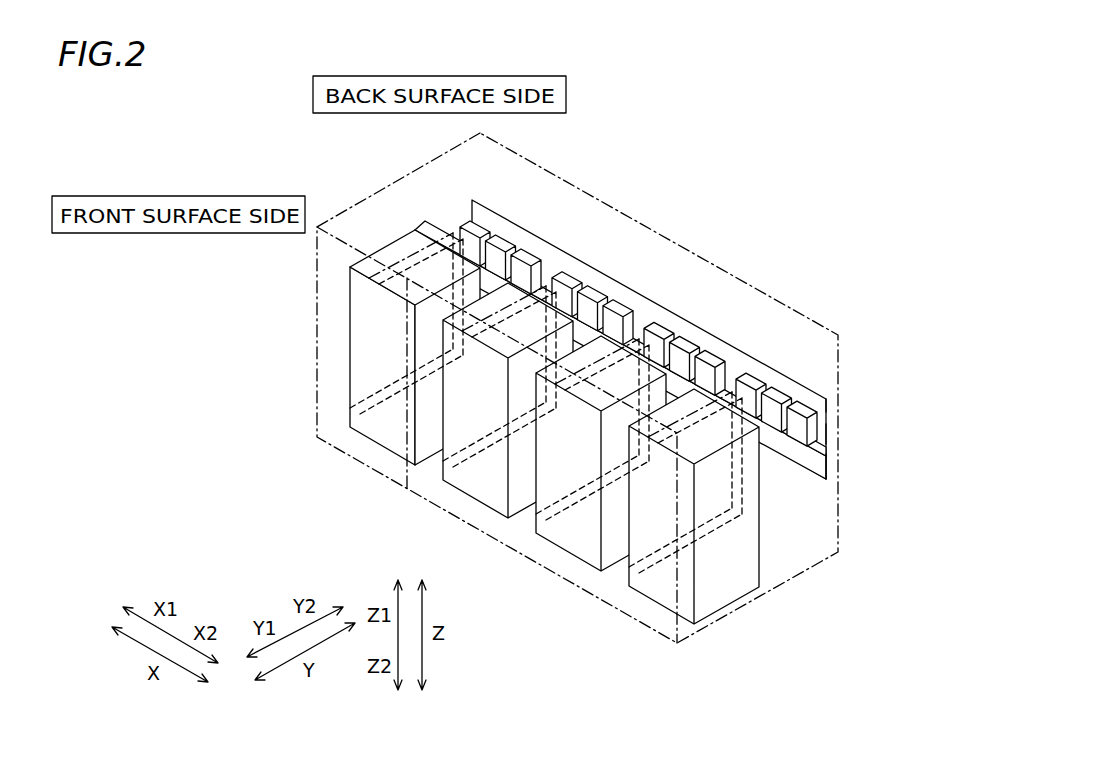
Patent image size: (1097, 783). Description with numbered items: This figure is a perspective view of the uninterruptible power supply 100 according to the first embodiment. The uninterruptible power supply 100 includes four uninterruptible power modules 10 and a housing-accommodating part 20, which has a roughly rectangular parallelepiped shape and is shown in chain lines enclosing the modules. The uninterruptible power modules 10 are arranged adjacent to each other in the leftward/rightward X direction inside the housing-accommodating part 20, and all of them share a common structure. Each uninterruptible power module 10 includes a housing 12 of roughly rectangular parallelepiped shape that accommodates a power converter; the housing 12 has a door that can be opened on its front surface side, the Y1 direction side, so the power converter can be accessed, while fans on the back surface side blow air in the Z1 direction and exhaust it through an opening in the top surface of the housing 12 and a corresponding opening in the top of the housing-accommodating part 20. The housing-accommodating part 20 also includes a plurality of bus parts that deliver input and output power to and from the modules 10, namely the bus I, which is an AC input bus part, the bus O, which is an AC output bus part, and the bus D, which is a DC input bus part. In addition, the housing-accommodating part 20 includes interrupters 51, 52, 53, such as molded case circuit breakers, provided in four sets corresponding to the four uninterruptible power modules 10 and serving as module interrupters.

The uninterruptible power supply 100 is at (723, 160).
The uninterruptible power module 10 is at (504, 455).
The housing 12 is at (348, 385).
The housing-accommodating part 20 is at (840, 520).
The interrupter 51 is at (484, 219).
The interrupter 52 is at (509, 234).
The interrupter 53 is at (534, 250).
The bus D is at (828, 411).
The bus I is at (828, 436).
The bus O is at (828, 461).